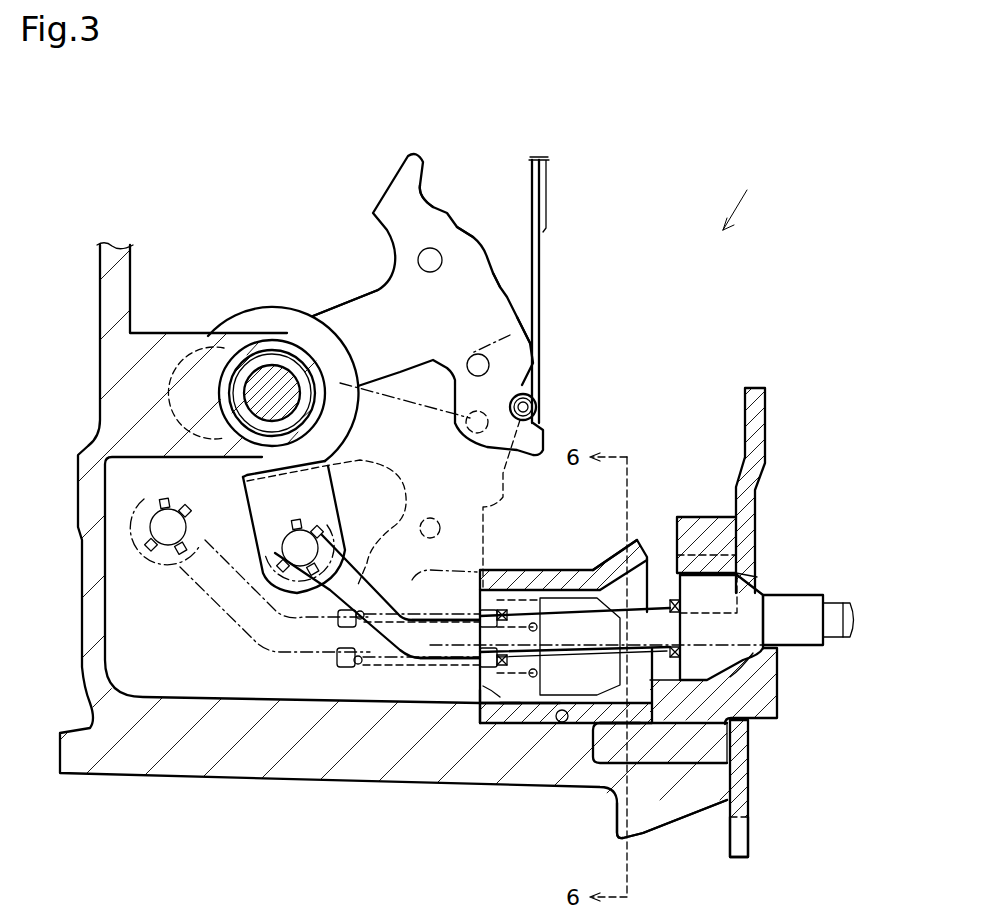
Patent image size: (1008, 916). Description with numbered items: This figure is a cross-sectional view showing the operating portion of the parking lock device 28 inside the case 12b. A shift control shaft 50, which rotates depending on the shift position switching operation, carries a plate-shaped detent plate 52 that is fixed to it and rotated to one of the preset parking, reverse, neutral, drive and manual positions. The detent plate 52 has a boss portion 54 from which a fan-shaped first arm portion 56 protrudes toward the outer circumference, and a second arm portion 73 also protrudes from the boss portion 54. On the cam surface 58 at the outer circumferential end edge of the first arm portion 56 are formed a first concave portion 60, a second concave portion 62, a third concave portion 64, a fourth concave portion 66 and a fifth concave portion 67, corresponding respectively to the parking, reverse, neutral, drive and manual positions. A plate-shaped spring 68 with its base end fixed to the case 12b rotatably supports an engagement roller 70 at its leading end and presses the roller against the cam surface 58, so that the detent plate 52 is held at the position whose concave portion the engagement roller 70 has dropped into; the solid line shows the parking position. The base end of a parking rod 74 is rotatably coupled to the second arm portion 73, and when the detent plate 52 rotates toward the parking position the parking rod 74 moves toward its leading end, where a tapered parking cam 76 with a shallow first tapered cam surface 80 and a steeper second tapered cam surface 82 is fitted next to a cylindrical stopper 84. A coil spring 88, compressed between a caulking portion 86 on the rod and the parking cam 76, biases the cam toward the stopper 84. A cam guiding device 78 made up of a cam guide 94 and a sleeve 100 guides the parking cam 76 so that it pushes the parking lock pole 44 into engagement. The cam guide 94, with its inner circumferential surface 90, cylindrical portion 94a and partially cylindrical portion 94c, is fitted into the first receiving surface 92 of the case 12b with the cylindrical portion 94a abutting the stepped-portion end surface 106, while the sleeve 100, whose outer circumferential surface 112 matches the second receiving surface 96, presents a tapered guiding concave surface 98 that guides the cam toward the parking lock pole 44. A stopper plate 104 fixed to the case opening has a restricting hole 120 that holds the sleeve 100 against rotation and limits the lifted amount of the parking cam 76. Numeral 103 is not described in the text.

The case 12b is at (187, 763).
The parking lock device 28 is at (742, 195).
The parking lock pole 44 is at (717, 517).
The shift control shaft 50 is at (272, 368).
The detent plate 52 is at (377, 171).
The boss portion 54 is at (205, 348).
The first arm portion 56 is at (370, 303).
The cam surface 58 is at (510, 335).
The first concave portion 60 is at (543, 418).
The second concave portion 62 is at (500, 304).
The third concave portion 64 is at (490, 273).
The fourth concave portion 66 is at (460, 233).
The fifth concave portion 67 is at (423, 197).
The plate-shaped spring 68 is at (540, 257).
The engagement roller 70 is at (540, 407).
The second arm portion 73 is at (327, 505).
The parking rod 74 is at (317, 597).
The parking cam 76 is at (753, 653).
The cam guiding device 78 is at (645, 477).
The first tapered cam surface 80 is at (750, 678).
The second tapered cam surface 82 is at (757, 583).
The cylindrical stopper 84 is at (820, 617).
The caulking portion 86 is at (497, 587).
The coil spring 88 is at (523, 587).
The inner circumferential surface 90 is at (482, 695).
The first receiving surface 92 is at (570, 723).
The cam guide 94 is at (571, 547).
The cylindrical portion 94a is at (622, 560).
The partially cylindrical portion 94c is at (593, 780).
The second receiving surface 96 is at (752, 763).
The tapered guiding concave surface 98 is at (673, 600).
The sleeve 100 is at (815, 720).
The seal 103 is at (458, 587).
The stopper plate 104 is at (750, 807).
The stepped-portion end surface 106 is at (497, 723).
The outer circumferential surface 112 is at (670, 763).
The restricting hole 120 is at (757, 577).